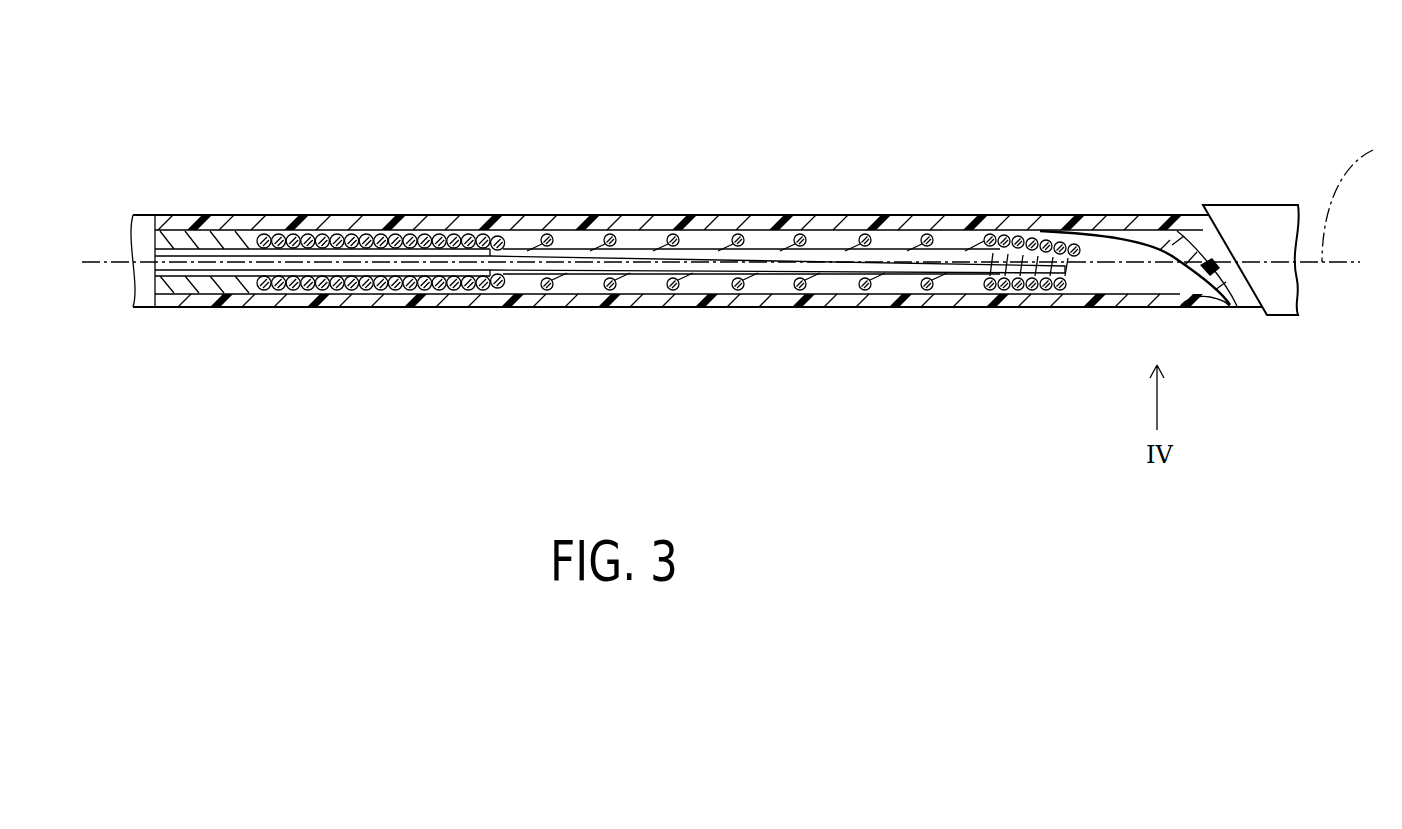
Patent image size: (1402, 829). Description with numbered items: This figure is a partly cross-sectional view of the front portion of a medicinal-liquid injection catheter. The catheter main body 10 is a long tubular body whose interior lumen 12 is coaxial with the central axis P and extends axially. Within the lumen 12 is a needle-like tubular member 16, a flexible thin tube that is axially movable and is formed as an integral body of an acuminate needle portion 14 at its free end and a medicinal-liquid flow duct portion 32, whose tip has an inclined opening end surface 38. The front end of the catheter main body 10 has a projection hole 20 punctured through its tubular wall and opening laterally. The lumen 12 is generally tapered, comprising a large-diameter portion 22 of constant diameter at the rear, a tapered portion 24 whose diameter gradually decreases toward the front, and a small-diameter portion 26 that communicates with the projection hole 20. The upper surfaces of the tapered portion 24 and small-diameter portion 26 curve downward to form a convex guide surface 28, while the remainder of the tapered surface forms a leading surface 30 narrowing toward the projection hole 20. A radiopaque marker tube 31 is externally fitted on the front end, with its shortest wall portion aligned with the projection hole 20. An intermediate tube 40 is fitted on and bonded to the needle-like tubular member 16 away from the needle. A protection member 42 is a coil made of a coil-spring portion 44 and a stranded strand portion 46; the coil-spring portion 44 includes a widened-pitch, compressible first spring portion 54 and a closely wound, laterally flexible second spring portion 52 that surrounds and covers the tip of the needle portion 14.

The catheter main body 10 is at (273, 198).
The lumen 12 is at (586, 280).
The needle portion 14 is at (965, 268).
The needle-like tubular member 16 is at (888, 250).
The projection hole 20 is at (1212, 302).
The large-diameter portion 22 is at (838, 284).
The tapered portion 24 is at (1114, 274).
The small-diameter portion 26 is at (1168, 272).
The guide surface 28 is at (1168, 252).
The leading surface 30 is at (1134, 272).
The marker tube 31 is at (1253, 222).
The medicinal-liquid flow duct portion 32 is at (330, 263).
The opening end surface 38 is at (1058, 292).
The intermediate tube 40 is at (183, 283).
The protection member 42 is at (642, 92).
The coil-spring portion 44 is at (800, 213).
The strand portion 46 is at (410, 213).
The second spring portion 52 is at (1032, 292).
The first spring portion 54 is at (740, 290).
The central axis P is at (1358, 200).